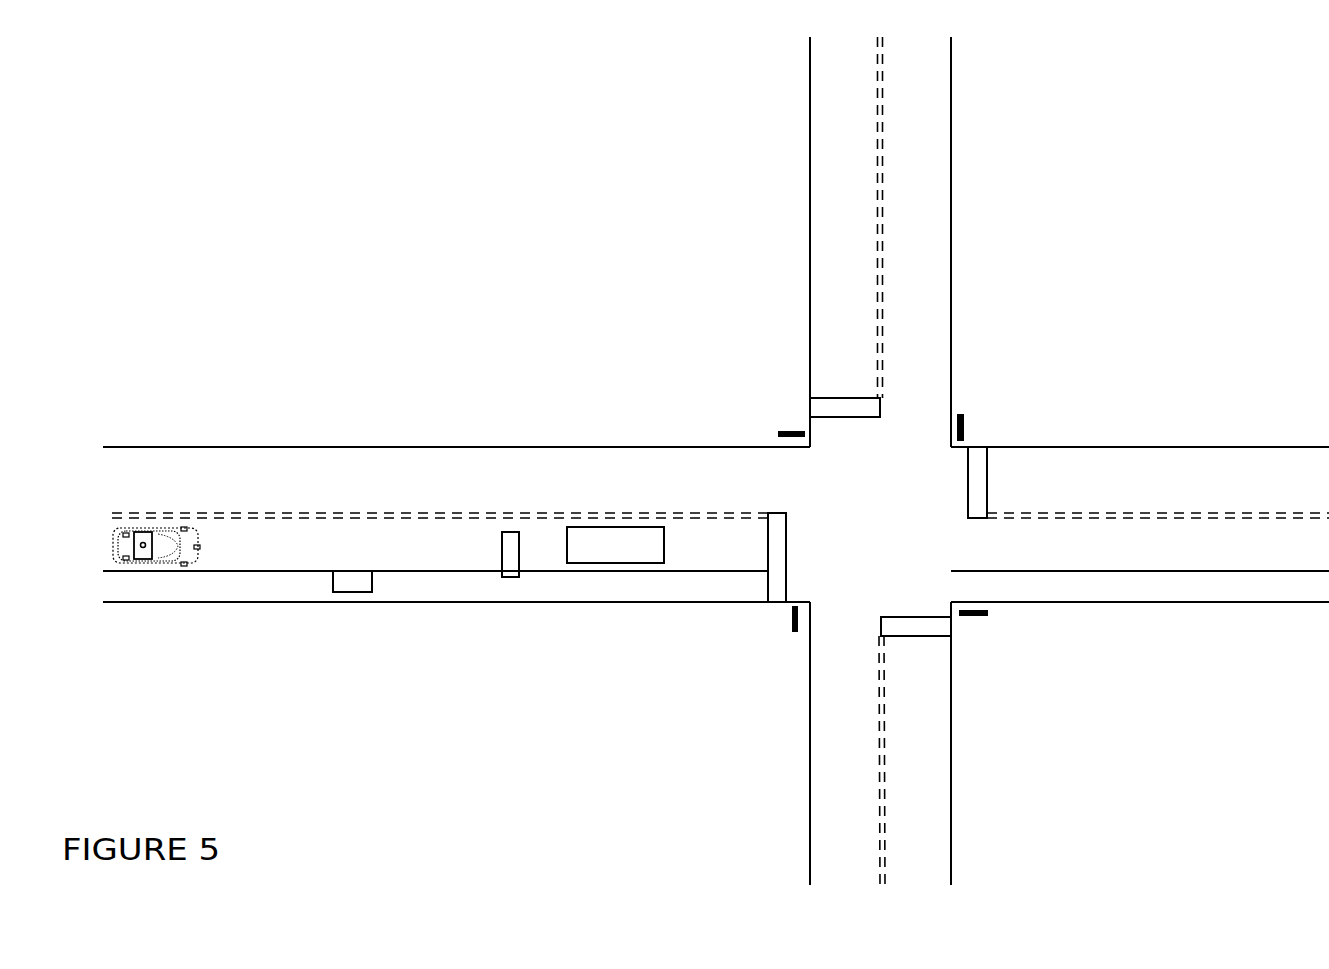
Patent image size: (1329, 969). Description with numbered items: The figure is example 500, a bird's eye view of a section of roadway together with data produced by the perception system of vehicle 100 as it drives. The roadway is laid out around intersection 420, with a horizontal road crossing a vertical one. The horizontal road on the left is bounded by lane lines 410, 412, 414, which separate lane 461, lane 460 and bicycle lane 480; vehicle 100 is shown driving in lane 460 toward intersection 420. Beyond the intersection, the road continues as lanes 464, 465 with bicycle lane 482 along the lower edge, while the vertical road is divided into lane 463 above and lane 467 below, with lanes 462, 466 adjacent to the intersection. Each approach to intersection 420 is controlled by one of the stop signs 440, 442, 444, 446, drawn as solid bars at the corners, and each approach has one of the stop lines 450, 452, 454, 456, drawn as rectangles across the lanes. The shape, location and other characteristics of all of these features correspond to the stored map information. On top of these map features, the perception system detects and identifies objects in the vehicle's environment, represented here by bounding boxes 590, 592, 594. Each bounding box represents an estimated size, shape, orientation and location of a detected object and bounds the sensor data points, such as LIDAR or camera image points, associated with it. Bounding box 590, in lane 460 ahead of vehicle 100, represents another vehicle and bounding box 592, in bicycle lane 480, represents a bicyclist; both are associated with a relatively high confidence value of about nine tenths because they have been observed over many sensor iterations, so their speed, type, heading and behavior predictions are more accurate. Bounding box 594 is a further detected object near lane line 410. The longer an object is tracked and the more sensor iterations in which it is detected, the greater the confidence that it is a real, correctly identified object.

The vehicle 100 is at (155, 532).
The lane line 410 is at (128, 571).
The lane line 412 is at (243, 518).
The lane line 414 is at (338, 450).
The intersection 420 is at (880, 524).
The stop sign 440 is at (793, 633).
The stop sign 442 is at (792, 432).
The stop sign 444 is at (963, 412).
The stop sign 446 is at (978, 616).
The stop line 450 is at (922, 638).
The stop line 452 is at (768, 553).
The stop line 454 is at (822, 399).
The stop line 456 is at (987, 478).
The lane 460 is at (430, 552).
The lane 461 is at (500, 475).
The lane 462 is at (845, 384).
The lane 463 is at (880, 242).
The lane 464 is at (1140, 482).
The lane 465 is at (1140, 553).
The lane 466 is at (916, 669).
The lane 467 is at (880, 743).
The bicycle lane 480 is at (650, 586).
The bicycle lane 482 is at (1265, 588).
The example 500 is at (159, 806).
The bounding box 590 is at (617, 528).
The bounding box 592 is at (372, 580).
The bounding box 594 is at (502, 549).